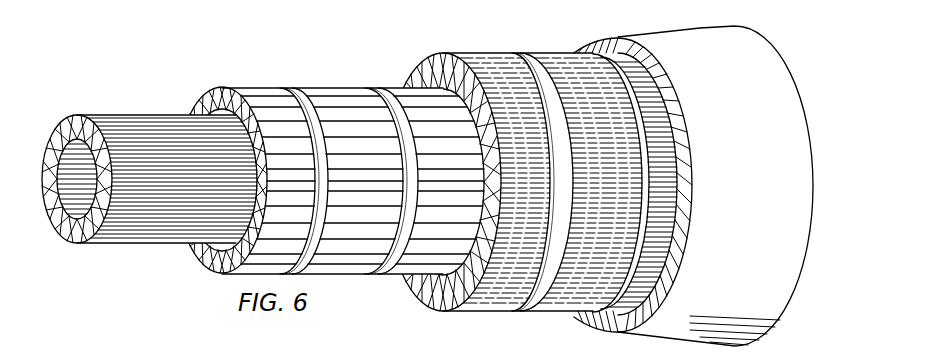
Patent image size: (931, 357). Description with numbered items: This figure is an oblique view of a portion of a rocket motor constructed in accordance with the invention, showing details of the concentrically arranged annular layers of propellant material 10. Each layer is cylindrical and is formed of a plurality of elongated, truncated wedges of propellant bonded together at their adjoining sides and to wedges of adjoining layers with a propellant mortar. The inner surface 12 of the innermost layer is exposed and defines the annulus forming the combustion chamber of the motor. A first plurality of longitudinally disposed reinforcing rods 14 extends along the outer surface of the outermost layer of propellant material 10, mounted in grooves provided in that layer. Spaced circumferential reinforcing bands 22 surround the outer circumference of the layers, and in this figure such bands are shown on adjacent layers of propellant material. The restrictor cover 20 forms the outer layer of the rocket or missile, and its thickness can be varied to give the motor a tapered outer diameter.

The annular layers of propellant material 10 is at (352, 88).
The inner surface 12 is at (58, 216).
The longitudinally disposed reinforcing rods 14 is at (680, 165).
The restrictor cover 20 is at (593, 46).
The circumferential reinforcing bands 22 is at (542, 171).